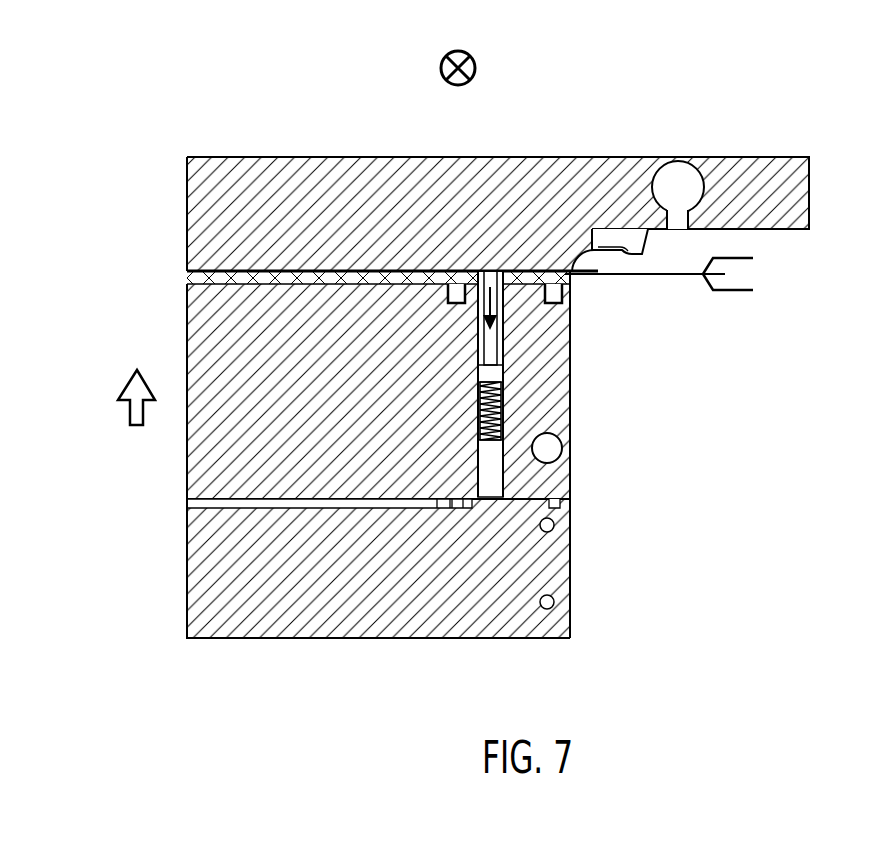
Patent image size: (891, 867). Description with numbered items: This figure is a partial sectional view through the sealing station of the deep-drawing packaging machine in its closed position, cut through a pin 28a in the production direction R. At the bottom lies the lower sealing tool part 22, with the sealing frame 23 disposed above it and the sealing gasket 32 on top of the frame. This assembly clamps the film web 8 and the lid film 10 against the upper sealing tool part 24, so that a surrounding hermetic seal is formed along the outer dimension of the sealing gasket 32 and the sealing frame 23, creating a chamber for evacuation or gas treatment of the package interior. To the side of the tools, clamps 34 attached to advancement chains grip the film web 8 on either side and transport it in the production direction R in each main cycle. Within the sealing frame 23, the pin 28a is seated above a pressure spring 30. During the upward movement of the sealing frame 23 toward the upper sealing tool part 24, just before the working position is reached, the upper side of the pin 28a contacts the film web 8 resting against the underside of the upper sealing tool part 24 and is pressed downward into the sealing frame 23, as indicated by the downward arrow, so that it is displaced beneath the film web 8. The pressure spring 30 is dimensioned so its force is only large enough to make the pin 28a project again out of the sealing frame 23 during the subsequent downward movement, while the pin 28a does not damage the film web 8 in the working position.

The film web 8 is at (680, 276).
The lid film 10 is at (595, 268).
The lower sealing tool part 22 is at (553, 552).
The sealing frame 23 is at (560, 372).
The upper sealing tool part 24 is at (800, 185).
The pin 28a is at (492, 338).
The pressure spring 30 is at (503, 410).
The sealing gasket 32 is at (195, 280).
The clamps 34 is at (745, 289).
The production direction R is at (476, 68).